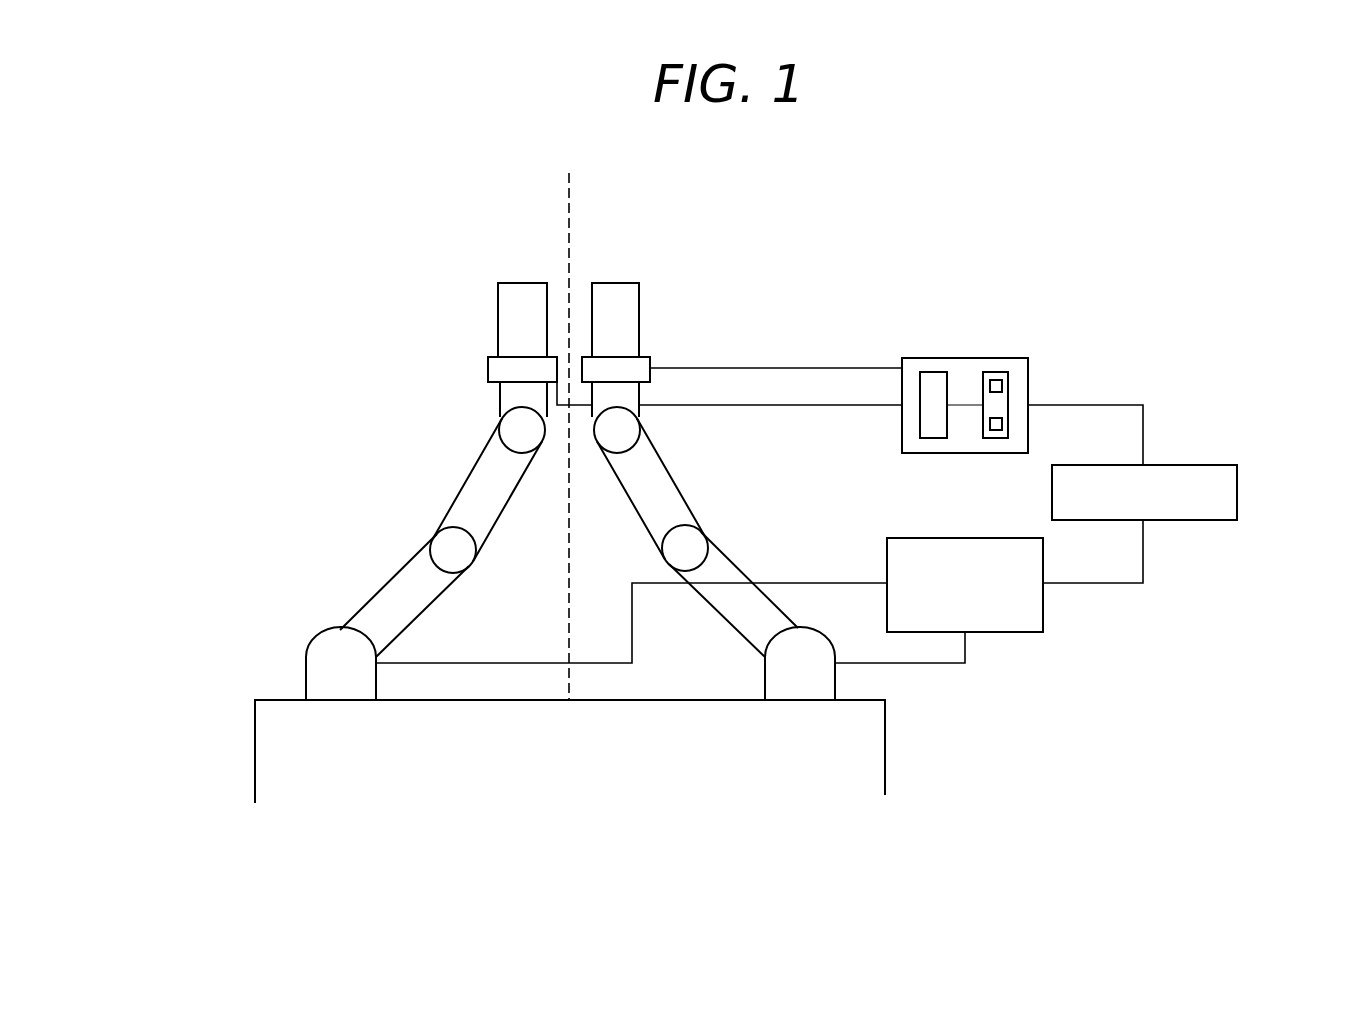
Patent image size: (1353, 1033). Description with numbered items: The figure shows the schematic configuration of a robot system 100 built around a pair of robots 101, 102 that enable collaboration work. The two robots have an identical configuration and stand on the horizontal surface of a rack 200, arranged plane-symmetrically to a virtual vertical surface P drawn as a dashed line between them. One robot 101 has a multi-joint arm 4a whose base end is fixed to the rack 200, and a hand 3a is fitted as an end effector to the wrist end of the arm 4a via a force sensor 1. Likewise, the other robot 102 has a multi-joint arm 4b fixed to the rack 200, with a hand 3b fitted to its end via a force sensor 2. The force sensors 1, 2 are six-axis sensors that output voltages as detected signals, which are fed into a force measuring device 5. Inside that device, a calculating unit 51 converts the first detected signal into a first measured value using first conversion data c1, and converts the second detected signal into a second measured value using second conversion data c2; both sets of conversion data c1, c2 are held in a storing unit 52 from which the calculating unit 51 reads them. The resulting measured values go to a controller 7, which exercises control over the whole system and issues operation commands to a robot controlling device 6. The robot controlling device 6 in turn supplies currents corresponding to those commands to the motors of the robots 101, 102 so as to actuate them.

The robot system 100 is at (834, 232).
The robot 101 is at (418, 470).
The robot 102 is at (726, 487).
The force sensor 1 is at (488, 366).
The force sensor 2 is at (652, 358).
The hand 3a is at (498, 303).
The hand 3b is at (640, 302).
The multi-joint arm 4a is at (306, 670).
The multi-joint arm 4b is at (765, 672).
The force measuring device 5 is at (968, 358).
The calculating unit 51 is at (933, 372).
The storing unit 52 is at (998, 372).
The robot controlling device 6 is at (937, 538).
The controller 7 is at (1052, 490).
The rack 200 is at (885, 753).
The virtual vertical surface P is at (571, 194).
The first conversion data c1 is at (1002, 386).
The second conversion data c2 is at (1002, 424).